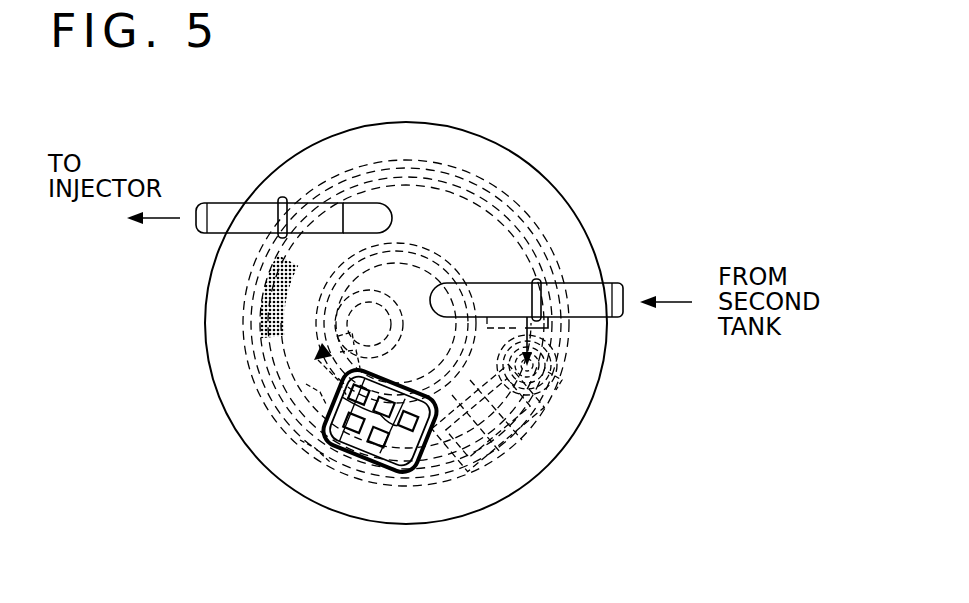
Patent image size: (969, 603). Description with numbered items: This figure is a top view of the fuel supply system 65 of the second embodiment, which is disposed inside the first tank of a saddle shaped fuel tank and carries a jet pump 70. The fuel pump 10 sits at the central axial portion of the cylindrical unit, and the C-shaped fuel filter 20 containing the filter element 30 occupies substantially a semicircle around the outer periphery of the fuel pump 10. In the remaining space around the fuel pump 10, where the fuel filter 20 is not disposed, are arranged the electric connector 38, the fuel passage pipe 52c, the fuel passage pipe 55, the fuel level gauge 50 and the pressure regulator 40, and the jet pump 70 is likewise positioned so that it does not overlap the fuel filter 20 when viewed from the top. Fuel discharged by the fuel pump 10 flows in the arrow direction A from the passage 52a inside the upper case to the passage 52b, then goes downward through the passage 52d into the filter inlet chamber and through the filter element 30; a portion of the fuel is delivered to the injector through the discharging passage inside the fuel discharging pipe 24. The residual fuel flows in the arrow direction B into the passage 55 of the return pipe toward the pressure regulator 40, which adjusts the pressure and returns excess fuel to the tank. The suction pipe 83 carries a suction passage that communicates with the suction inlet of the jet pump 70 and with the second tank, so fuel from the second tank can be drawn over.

The fuel supply system 65 is at (256, 150).
The fuel pump 10 is at (472, 172).
The fuel filter 20 is at (343, 180).
The fuel discharging pipe 24 is at (218, 216).
The filter element 30 is at (272, 284).
The suction pipe 83 is at (592, 295).
The arrow direction B is at (560, 333).
The fuel passage pipe 55 is at (556, 398).
The jet pump 70 is at (568, 376).
The pressure regulator 40 is at (553, 440).
The electric connector 38 is at (393, 473).
The fuel level gauge 50 is at (437, 443).
The passage 52a is at (300, 447).
The passage 52b is at (330, 344).
The fuel passage pipe 52c is at (305, 392).
The passage 52d is at (336, 357).
The arrow direction A is at (328, 358).